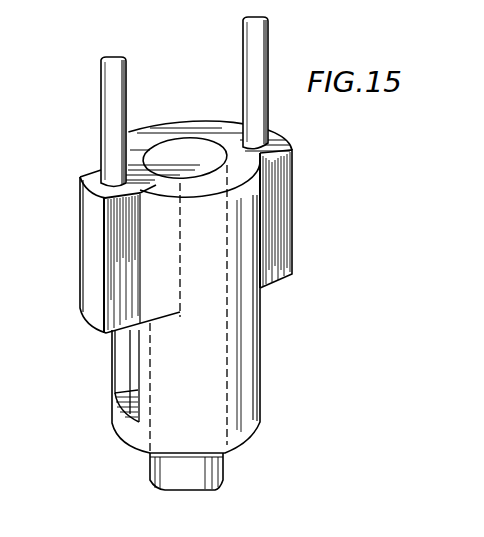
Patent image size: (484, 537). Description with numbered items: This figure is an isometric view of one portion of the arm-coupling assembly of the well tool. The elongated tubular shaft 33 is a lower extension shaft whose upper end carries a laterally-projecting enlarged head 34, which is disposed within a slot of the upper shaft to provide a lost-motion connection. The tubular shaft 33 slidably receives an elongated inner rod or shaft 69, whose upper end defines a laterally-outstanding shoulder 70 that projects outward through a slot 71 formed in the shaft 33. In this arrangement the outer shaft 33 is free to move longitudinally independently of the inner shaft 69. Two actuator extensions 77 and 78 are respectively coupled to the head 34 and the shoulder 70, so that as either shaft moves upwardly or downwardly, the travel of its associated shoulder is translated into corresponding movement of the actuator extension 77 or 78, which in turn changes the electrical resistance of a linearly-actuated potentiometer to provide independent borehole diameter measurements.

The tubular shaft 33 is at (250, 384).
The enlarged head 34 is at (282, 212).
The rod or shaft 69 is at (217, 470).
The laterally-outstanding shoulder 70 is at (117, 255).
The slot 71 is at (130, 355).
The actuator extension 77 is at (260, 45).
The actuator extension 78 is at (108, 72).